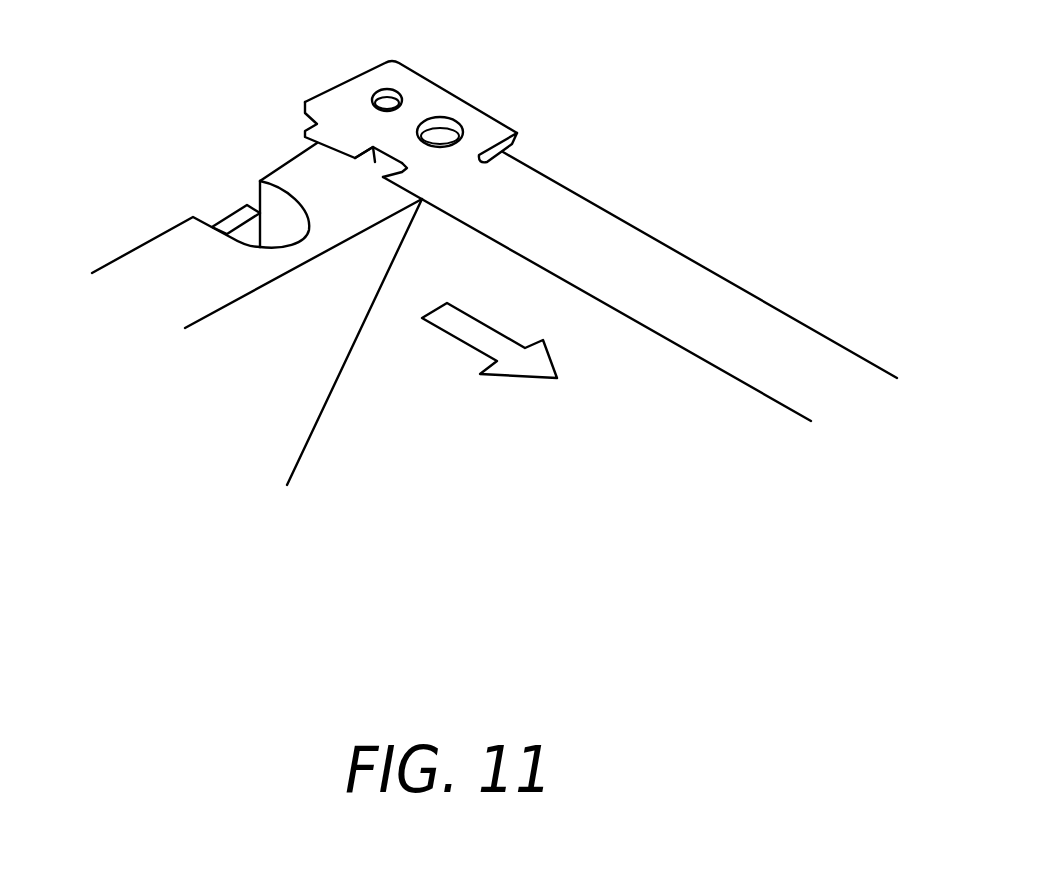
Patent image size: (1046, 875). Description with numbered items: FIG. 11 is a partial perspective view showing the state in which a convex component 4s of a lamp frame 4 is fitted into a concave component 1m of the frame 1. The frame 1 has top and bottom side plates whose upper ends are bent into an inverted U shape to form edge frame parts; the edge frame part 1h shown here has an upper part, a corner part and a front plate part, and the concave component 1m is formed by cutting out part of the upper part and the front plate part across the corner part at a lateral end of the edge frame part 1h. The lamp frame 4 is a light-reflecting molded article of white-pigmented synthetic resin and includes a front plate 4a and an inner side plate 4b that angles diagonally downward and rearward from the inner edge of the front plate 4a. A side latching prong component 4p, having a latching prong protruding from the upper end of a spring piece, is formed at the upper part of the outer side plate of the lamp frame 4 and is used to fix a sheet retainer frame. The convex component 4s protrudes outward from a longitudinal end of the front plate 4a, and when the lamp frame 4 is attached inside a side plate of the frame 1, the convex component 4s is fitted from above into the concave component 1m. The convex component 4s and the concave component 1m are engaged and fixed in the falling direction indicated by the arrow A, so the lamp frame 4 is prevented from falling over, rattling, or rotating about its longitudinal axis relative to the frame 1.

The frame 1 is at (662, 155).
The concave component 1m is at (393, 155).
The edge frame part 1h is at (643, 395).
The lamp frame 4 is at (120, 213).
The front plate 4a is at (305, 173).
The inner side plate 4b is at (298, 368).
The side latching prong component 4p is at (227, 212).
The convex component 4s is at (373, 147).
The arrow A is at (507, 368).